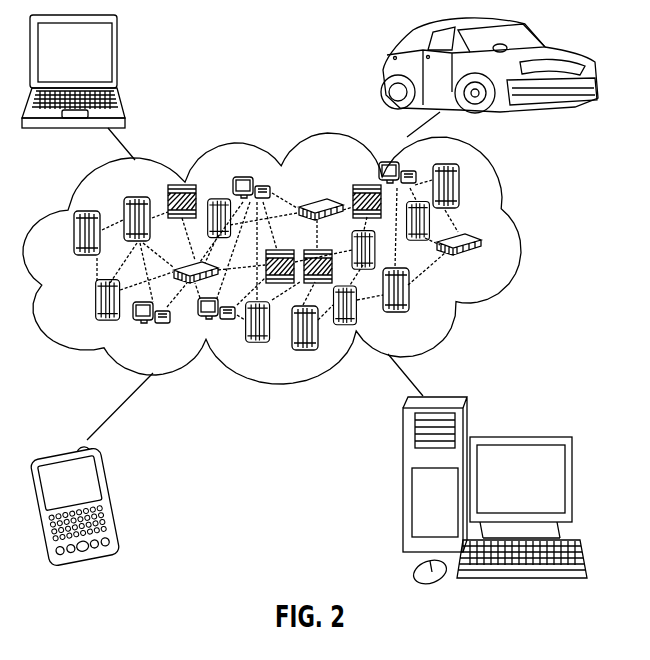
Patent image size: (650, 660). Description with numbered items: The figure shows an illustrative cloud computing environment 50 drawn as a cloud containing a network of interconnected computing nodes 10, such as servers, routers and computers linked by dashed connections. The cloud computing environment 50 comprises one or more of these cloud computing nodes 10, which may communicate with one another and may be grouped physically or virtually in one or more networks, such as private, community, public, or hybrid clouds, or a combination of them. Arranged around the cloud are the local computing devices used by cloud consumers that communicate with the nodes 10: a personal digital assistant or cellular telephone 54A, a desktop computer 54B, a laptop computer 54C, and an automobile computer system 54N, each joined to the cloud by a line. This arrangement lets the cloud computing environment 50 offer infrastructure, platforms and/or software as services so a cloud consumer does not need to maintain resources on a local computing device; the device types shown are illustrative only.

The cloud computing node 10 is at (483, 263).
The cloud computing environment 50 is at (289, 258).
The personal digital assistant or cellular telephone 54A is at (110, 497).
The desktop computer 54B is at (518, 437).
The laptop computer 54C is at (118, 60).
The automobile computer system 54N is at (385, 72).